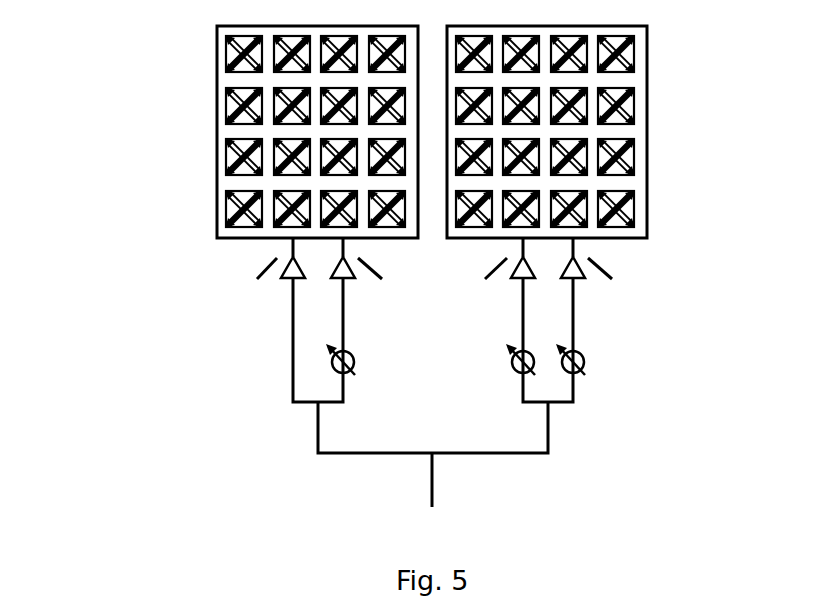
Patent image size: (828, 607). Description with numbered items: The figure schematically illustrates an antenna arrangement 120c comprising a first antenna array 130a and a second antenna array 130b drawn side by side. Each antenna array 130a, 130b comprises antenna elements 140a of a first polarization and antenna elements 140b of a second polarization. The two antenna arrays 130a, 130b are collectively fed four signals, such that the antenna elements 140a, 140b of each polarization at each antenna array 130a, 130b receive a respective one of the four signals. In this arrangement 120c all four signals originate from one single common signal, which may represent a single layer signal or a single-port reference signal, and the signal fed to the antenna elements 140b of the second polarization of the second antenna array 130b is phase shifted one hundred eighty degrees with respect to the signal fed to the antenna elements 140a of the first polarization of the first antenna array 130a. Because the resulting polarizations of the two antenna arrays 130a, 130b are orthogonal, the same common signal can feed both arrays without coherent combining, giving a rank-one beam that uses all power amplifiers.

The antenna arrangement 120c is at (121, 320).
The first antenna array 130a is at (217, 188).
The second antenna array 130b is at (648, 182).
The antenna elements of the first polarization 140a is at (226, 106).
The antenna elements of the second polarization 140b is at (226, 57).